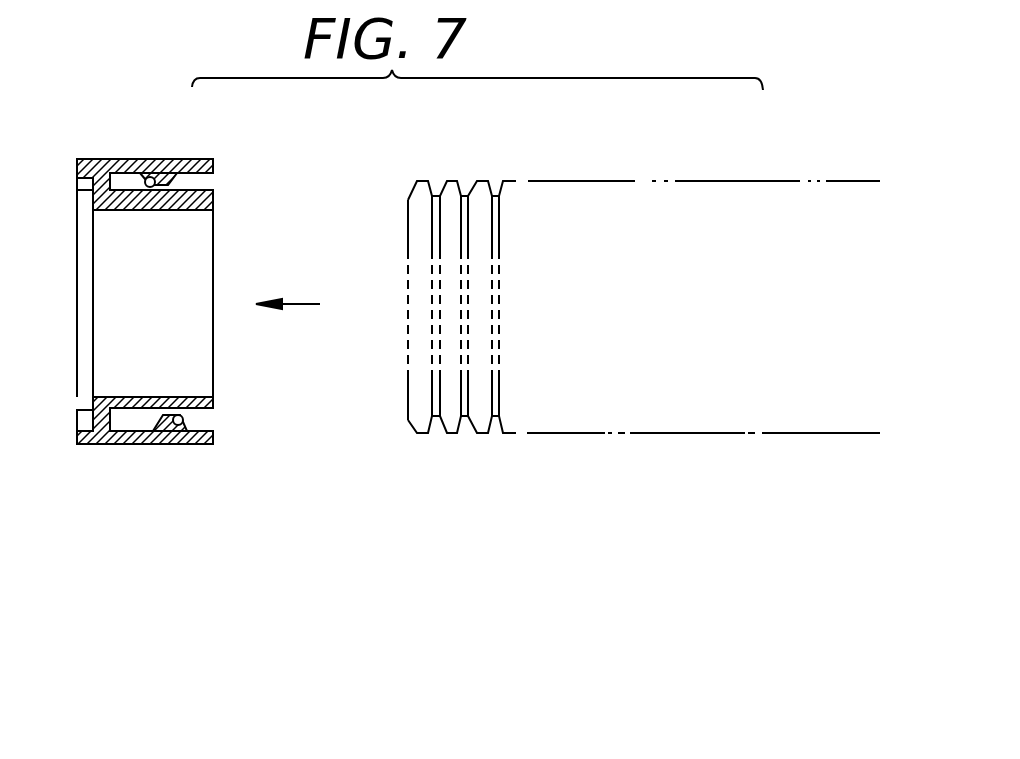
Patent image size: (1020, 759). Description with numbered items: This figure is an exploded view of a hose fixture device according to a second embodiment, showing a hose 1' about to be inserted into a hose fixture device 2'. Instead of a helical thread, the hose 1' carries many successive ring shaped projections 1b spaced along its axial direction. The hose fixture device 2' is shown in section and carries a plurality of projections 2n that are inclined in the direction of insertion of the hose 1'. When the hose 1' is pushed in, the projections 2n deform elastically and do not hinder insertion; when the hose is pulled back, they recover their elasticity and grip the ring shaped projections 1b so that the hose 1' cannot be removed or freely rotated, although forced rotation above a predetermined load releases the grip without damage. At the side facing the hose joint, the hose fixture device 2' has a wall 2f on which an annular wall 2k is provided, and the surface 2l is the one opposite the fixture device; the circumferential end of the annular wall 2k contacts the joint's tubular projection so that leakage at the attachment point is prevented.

The hose 1' is at (703, 267).
The ring shaped projections 1b is at (418, 425).
The hose fixture device 2' is at (164, 269).
The annular wall 2k is at (78, 191).
The wall 2f is at (78, 421).
The surface 2l is at (97, 159).
The projections 2n is at (153, 172).